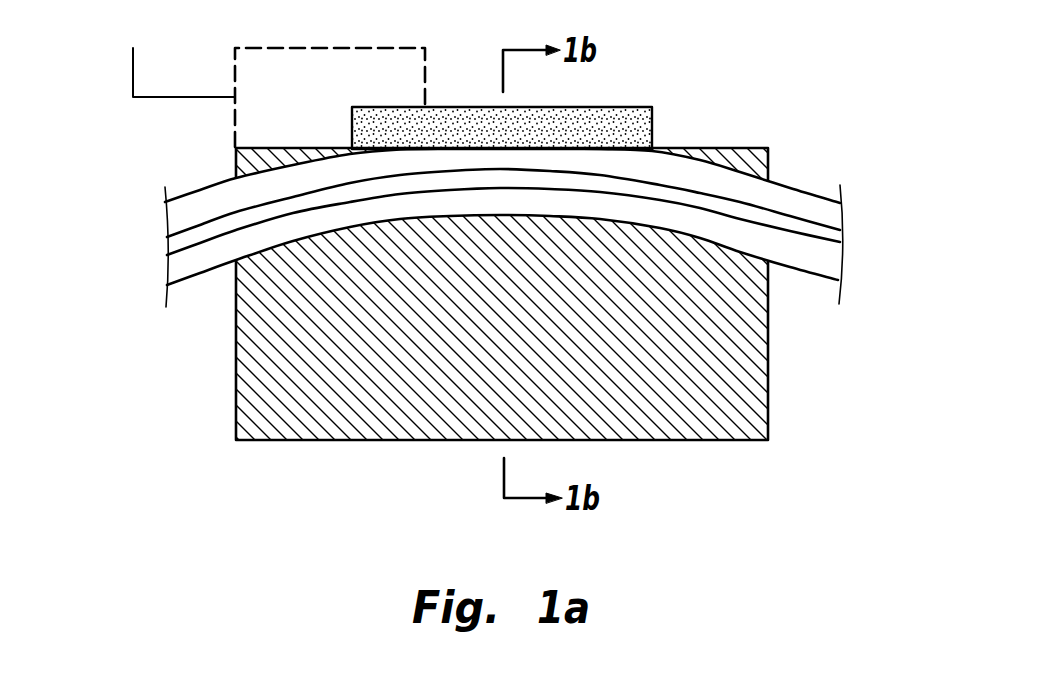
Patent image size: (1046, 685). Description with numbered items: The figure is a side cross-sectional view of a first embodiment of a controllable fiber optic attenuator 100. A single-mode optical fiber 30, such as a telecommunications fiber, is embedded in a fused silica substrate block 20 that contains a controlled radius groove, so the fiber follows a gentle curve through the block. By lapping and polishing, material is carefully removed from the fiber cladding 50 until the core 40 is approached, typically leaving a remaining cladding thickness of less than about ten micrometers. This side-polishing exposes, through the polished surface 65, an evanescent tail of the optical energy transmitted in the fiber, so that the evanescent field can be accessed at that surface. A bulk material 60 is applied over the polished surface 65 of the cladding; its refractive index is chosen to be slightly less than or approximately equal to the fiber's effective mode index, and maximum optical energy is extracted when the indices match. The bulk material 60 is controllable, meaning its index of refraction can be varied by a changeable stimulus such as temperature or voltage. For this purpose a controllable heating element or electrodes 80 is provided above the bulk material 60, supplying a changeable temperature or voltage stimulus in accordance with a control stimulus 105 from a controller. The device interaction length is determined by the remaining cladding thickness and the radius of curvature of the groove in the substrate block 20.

The fused silica substrate block 20 is at (518, 401).
The single-mode optical fiber 30 is at (497, 227).
The core 40 is at (815, 237).
The cladding 50 is at (790, 252).
The bulk material 60 is at (618, 123).
The polished surface 65 is at (472, 149).
The controllable heating element (or electrodes) 80 is at (360, 65).
The controllable attenuator 100 is at (778, 89).
The control stimulus 105 is at (133, 69).